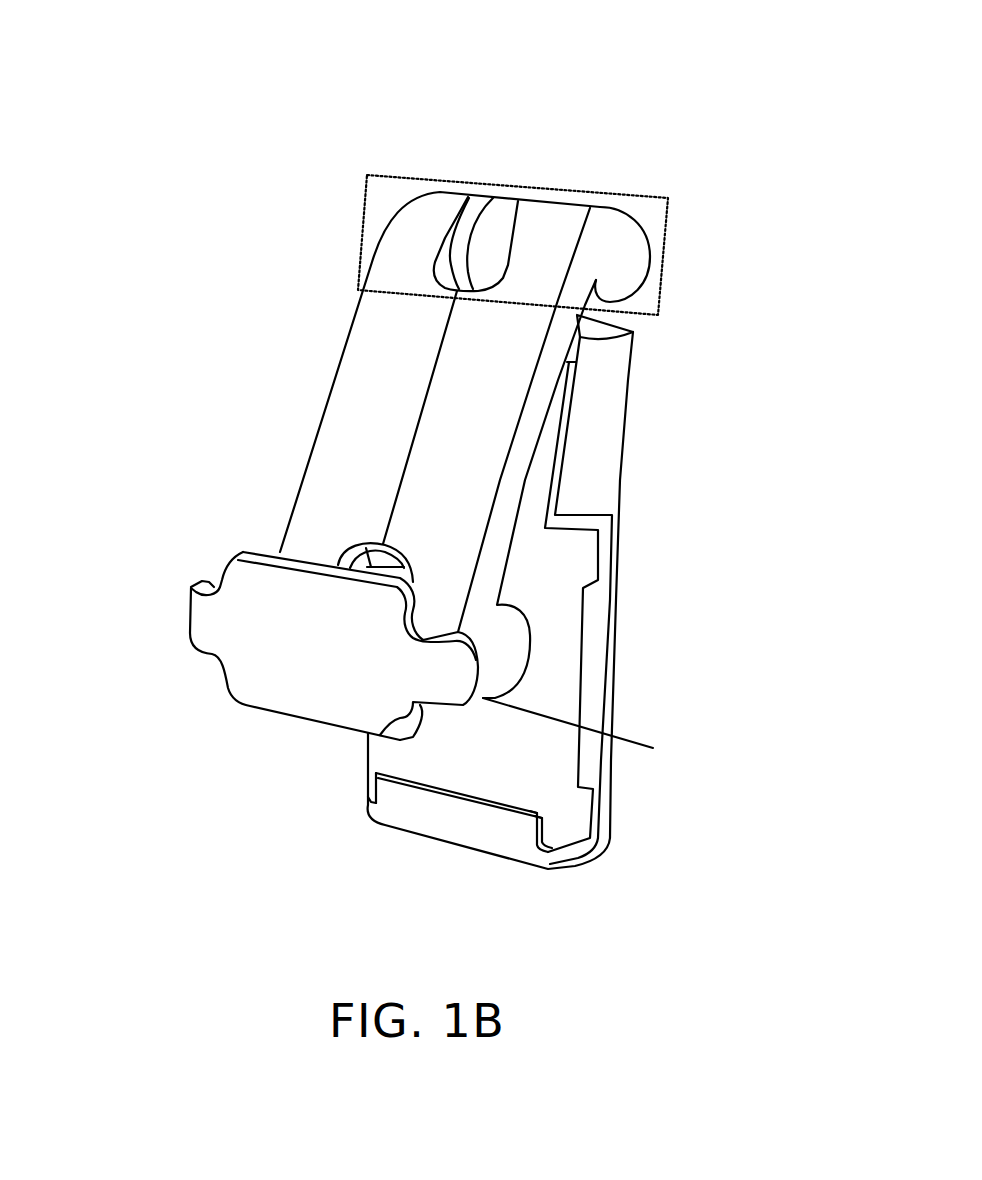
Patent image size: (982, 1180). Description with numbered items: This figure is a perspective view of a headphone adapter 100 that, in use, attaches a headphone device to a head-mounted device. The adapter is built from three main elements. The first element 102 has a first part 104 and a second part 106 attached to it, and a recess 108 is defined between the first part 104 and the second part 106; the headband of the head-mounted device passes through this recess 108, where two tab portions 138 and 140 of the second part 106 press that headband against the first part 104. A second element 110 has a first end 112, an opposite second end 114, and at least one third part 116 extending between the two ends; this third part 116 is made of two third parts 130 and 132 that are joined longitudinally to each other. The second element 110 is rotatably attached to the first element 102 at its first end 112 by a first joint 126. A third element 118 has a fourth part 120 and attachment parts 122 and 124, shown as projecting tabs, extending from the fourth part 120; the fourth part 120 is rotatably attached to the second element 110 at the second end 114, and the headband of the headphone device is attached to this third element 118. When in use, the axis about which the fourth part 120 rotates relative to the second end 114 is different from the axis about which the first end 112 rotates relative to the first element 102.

The headphone adapter 100 is at (707, 77).
The first element 102 is at (660, 396).
The first part 104 is at (610, 489).
The second part 106 is at (382, 750).
The recess 108 is at (590, 693).
The second element 110 is at (340, 270).
The first end 112 is at (573, 203).
The second end 114 is at (653, 748).
The third part 116 is at (332, 346).
The third element 118 is at (287, 691).
The fourth part 120 is at (263, 687).
The attachment part 122 is at (197, 618).
The attachment part 124 is at (455, 683).
The first joint 126 is at (667, 248).
The third part 130 is at (403, 525).
The third part 132 is at (337, 430).
The tab portion 138 is at (577, 560).
The tab portion 140 is at (570, 815).